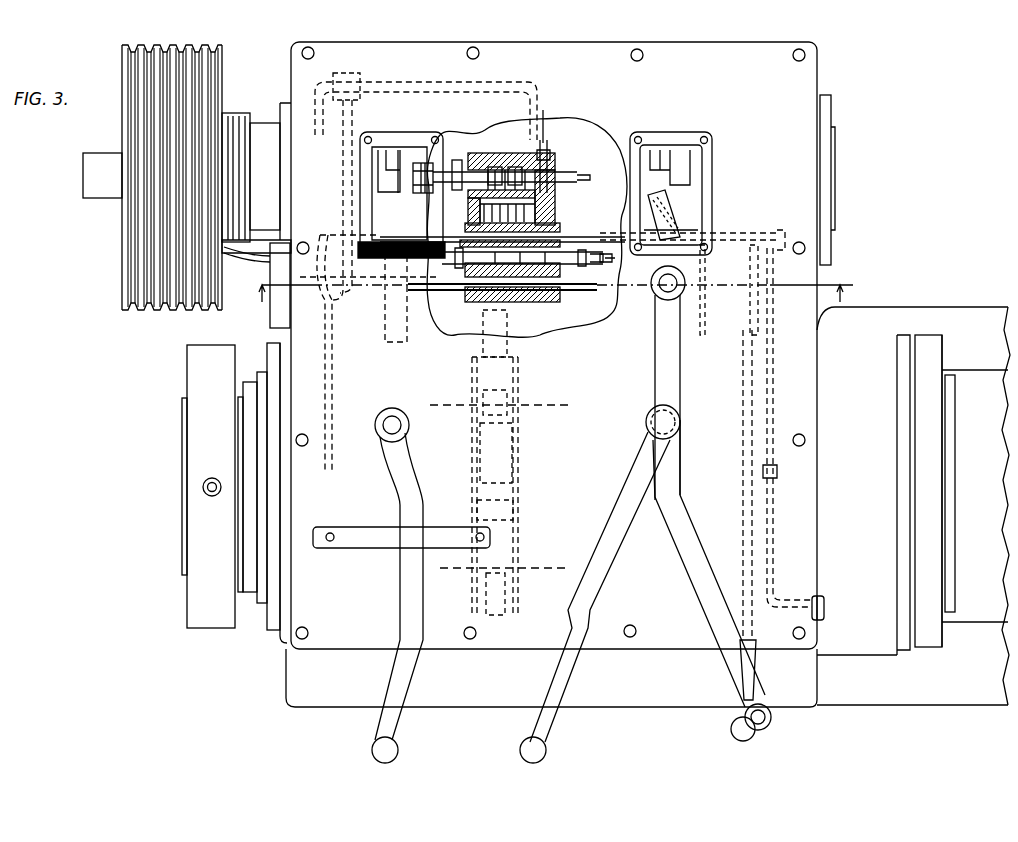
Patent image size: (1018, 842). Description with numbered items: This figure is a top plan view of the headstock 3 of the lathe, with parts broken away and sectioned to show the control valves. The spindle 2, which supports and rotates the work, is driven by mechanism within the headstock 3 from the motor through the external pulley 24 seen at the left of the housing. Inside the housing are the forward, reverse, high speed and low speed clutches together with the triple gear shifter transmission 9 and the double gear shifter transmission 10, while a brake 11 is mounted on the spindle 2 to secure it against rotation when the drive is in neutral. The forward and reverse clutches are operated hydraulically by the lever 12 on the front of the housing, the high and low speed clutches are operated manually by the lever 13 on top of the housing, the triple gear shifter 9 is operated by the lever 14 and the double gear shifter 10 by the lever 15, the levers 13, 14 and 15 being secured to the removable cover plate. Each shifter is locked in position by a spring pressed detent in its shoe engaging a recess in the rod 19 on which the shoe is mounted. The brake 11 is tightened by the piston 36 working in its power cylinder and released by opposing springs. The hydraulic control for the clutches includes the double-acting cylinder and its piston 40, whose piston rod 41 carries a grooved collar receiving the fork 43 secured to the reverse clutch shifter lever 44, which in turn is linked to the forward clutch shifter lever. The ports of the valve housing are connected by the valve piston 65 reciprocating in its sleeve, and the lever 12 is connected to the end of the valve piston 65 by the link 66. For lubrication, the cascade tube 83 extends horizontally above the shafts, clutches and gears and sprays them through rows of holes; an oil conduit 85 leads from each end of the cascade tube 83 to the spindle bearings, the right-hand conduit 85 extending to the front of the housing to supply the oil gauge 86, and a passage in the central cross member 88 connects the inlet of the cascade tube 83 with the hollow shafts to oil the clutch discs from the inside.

The spindle 2 is at (956, 415).
The headstock 3 is at (858, 330).
The triple gear shifter transmission 9 is at (550, 288).
The double gear shifter transmission 10 is at (553, 120).
The brake 11 is at (520, 415).
The lever 12 is at (730, 727).
The lever 13 is at (708, 592).
The lever 14 is at (400, 612).
The lever 15 is at (583, 601).
The rod 19 is at (440, 292).
The external pulley 24 is at (124, 253).
The piston 36 is at (490, 337).
The piston 40 is at (500, 160).
The piston rod 41 is at (447, 184).
The fork 43 is at (425, 162).
The reverse clutch shifter lever 44 is at (398, 190).
The valve piston 65 is at (570, 245).
The link 66 is at (596, 260).
The cascade tube 83 is at (420, 236).
The oil conduit 85 is at (330, 357).
The oil gauge 86 is at (820, 600).
The central cross member 88 is at (518, 138).